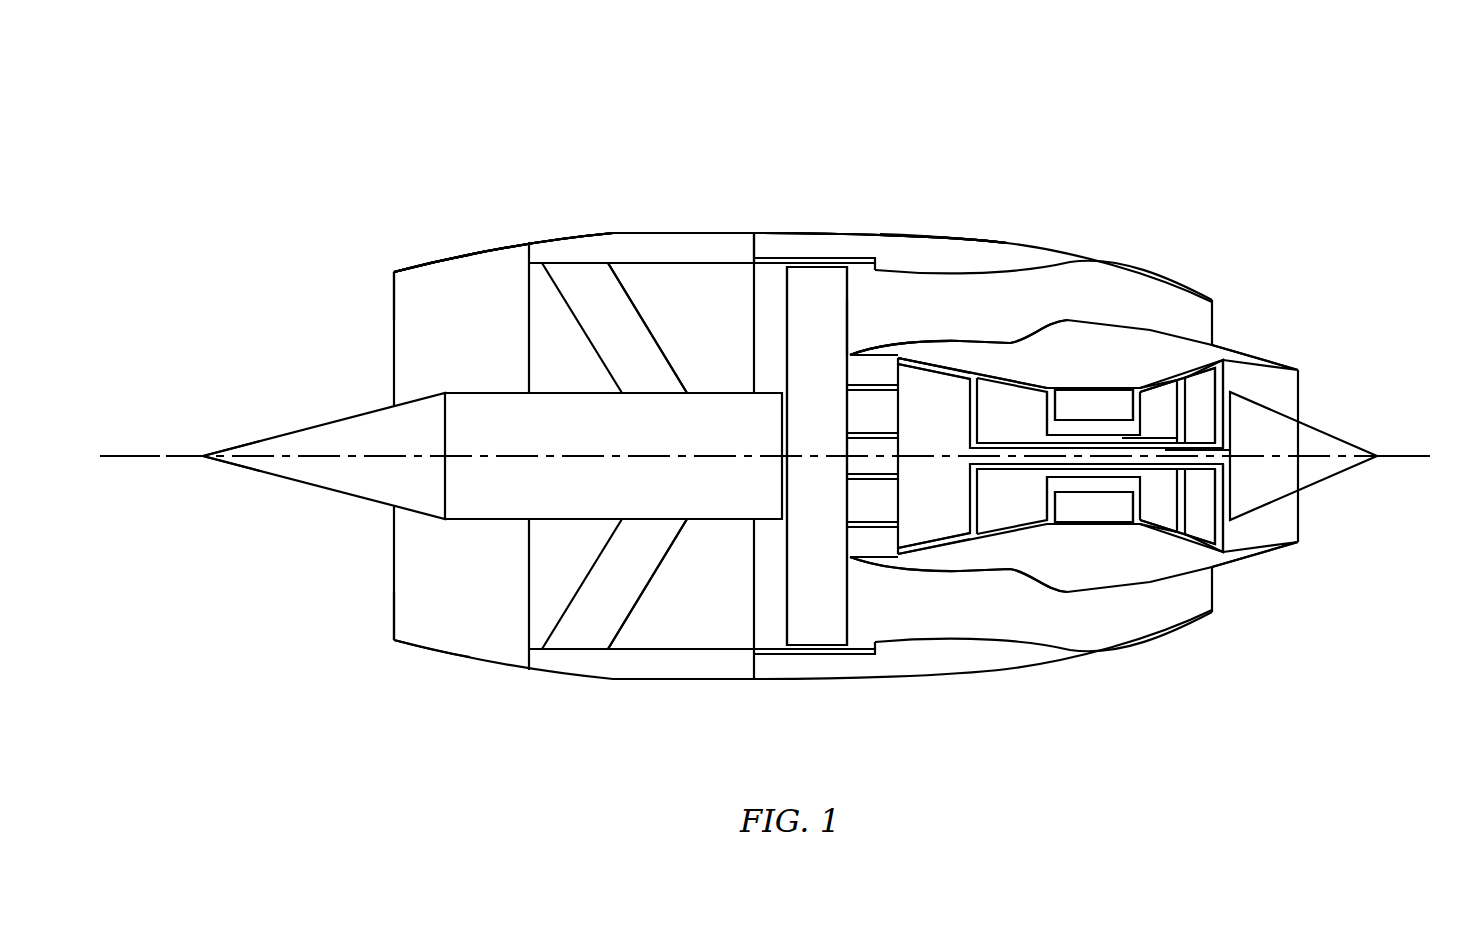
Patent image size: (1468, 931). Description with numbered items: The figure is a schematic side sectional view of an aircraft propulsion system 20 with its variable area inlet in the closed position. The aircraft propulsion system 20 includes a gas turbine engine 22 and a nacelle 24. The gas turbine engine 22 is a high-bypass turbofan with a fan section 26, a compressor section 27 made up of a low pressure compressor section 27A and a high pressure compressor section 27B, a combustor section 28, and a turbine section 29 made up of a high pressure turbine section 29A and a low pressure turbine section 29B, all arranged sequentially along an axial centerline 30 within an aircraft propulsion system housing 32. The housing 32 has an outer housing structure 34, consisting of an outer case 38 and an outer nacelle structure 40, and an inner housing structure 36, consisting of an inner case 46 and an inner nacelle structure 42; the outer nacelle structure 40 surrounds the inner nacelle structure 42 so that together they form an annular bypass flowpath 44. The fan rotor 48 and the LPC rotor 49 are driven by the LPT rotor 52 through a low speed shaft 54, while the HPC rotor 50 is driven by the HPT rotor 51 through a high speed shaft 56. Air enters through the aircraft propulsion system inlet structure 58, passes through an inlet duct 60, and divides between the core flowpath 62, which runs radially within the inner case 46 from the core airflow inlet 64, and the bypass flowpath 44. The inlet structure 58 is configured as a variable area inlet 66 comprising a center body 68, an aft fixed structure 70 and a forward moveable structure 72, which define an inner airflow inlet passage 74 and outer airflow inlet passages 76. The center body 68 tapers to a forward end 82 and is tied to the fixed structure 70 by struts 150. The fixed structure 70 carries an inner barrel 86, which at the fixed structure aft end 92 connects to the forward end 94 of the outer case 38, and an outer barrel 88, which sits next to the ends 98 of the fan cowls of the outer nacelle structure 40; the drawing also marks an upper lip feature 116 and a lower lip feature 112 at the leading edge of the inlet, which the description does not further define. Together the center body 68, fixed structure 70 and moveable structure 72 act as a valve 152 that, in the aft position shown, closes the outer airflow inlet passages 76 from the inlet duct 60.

The aircraft propulsion system 20 is at (1180, 160).
The gas turbine engine 22 is at (762, 608).
The nacelle 24 is at (683, 200).
The fan section 26 is at (857, 624).
The compressor section 27 is at (898, 683).
The low pressure compressor section 27A is at (935, 556).
The high pressure compressor section 27B is at (1013, 538).
The combustor section 28 is at (1083, 538).
The turbine section 29 is at (1137, 660).
The high pressure turbine section 29A is at (1147, 536).
The low pressure turbine section 29B is at (1197, 551).
The axial centerline 30 is at (1413, 458).
The aircraft propulsion system housing 32 is at (846, 182).
The outer housing structure 34 is at (858, 221).
The inner housing structure 36 is at (1089, 314).
The outer case 38 is at (795, 258).
The outer nacelle structure 40 is at (913, 228).
The inner nacelle structure 42 is at (1150, 328).
The bypass flowpath 44 is at (994, 335).
The inner case 46 is at (1090, 388).
The fan rotor 48 is at (850, 327).
The LPC rotor 49 is at (932, 366).
The HPC rotor 50 is at (1020, 386).
The HPT rotor 51 is at (1170, 375).
The LPT rotor 52 is at (1223, 378).
The low speed shaft 54 is at (1230, 450).
The high speed shaft 56 is at (1177, 438).
The aircraft propulsion system inlet structure 58 is at (755, 95).
The inlet duct 60 is at (734, 644).
The core flowpath 62 is at (1272, 383).
The core airflow inlet 64 is at (848, 539).
The variable area inlet 66 is at (755, 95).
The center body 68 is at (328, 412).
The aft fixed structure 70 is at (710, 227).
The forward moveable structure 72 is at (496, 232).
The inner airflow inlet passage 74 is at (430, 312).
The outer airflow inlet passages 76 is at (103, 458).
The forward end 82 is at (203, 460).
The inner barrel 86 is at (656, 268).
The outer barrel 88 is at (647, 229).
The aft end 92 is at (762, 268).
The forward end 94 is at (750, 263).
The ends 98 is at (754, 232).
The lower lip 112 is at (437, 662).
The upper lip 116 is at (394, 272).
The struts 150 is at (673, 360).
The valve 152 is at (755, 95).